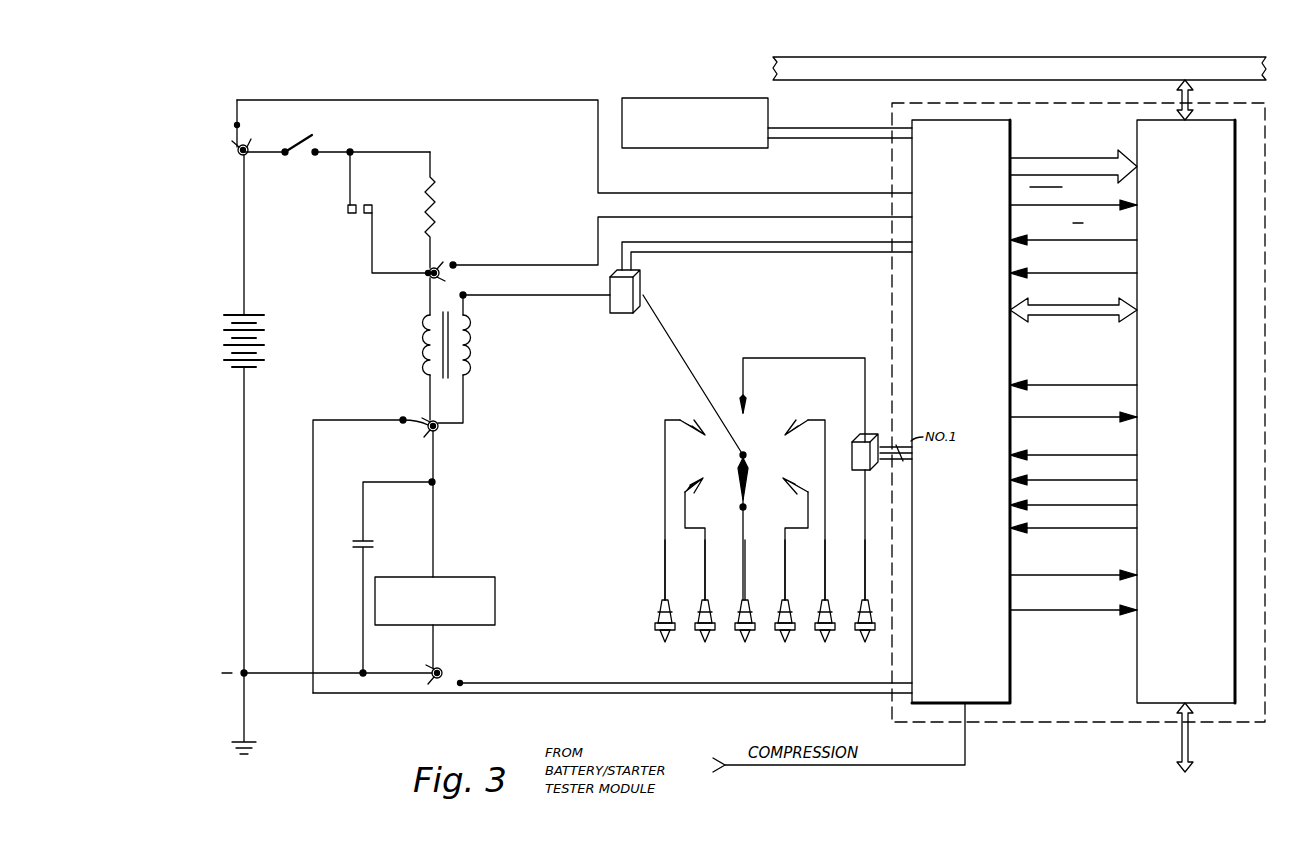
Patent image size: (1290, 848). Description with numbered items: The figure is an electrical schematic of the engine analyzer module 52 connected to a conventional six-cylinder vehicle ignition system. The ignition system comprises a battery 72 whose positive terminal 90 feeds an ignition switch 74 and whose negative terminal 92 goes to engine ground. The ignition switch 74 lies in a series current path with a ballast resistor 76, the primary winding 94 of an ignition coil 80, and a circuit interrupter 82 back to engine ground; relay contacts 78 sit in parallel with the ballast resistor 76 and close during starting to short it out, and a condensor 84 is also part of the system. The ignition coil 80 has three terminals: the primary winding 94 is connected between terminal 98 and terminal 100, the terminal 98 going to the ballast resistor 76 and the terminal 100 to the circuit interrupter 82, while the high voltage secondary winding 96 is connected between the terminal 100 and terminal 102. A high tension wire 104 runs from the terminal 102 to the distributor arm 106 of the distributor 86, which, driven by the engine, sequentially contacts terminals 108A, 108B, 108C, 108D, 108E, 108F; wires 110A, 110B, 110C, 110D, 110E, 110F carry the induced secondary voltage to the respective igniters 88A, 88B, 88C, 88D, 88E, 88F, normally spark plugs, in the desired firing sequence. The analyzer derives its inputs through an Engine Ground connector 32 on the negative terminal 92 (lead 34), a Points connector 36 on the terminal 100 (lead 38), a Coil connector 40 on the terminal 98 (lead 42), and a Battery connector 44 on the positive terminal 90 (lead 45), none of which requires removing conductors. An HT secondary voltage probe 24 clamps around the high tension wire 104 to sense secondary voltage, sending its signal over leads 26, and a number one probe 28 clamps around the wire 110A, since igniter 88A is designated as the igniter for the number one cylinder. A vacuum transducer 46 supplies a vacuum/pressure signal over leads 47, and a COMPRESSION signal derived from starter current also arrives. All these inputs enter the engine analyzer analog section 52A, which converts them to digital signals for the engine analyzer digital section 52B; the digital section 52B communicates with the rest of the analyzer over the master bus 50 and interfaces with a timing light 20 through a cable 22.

The timing light 20 is at (1184, 786).
The cable 22 is at (1198, 760).
The HT secondary voltage probe 24 is at (643, 288).
The pickup leads 26 is at (812, 243).
The No. 1 probe 28 is at (856, 440).
The Engine Ground connector 32 is at (443, 668).
The engine ground lead 34 is at (818, 684).
The Points connector 36 is at (427, 432).
The points lead 38 is at (403, 694).
The Coil connector 40 is at (452, 264).
The coil lead 42 is at (646, 218).
The Battery connector 44 is at (234, 147).
The battery lead 45 is at (617, 193).
The vacuum transducer 46 is at (639, 98).
The vacuum transducer leads 47 is at (793, 121).
The master bus 50 is at (862, 80).
The engine analyzer module 52 is at (1078, 423).
The engine analyzer analog section 52A is at (1012, 697).
The engine analyzer digital section 52B is at (1137, 656).
The battery 72 is at (220, 368).
The ignition switch 74 is at (305, 140).
The ballast resistor 76 is at (437, 208).
The relay contacts 78 is at (348, 211).
The ignition coil 80 is at (441, 345).
The circuit interrupter 82 is at (471, 577).
The condensor 84 is at (367, 540).
The distributor 86 is at (756, 459).
The igniter 88A is at (860, 637).
The igniter 88B is at (820, 637).
The igniter 88C is at (780, 637).
The igniter 88D is at (740, 637).
The igniter 88E is at (700, 637).
The igniter 88F is at (660, 637).
The positive terminal 90 is at (244, 177).
The negative terminal 92 is at (244, 658).
The primary winding 94 is at (428, 338).
The secondary winding 96 is at (468, 341).
The terminal 98 is at (428, 276).
The terminal 100 is at (440, 428).
The terminal 102 is at (465, 298).
The high tension wire 104 is at (555, 295).
The distributor arm 106 is at (747, 464).
The terminal 108A is at (746, 395).
The terminal 108B is at (793, 420).
The terminal 108C is at (789, 478).
The terminal 108D is at (749, 508).
The terminal 108E is at (700, 483).
The terminal 108F is at (683, 420).
The wire 110A is at (864, 580).
The wire 110B is at (824, 580).
The wire 110C is at (784, 580).
The wire 110D is at (744, 580).
The wire 110E is at (704, 580).
The wire 110F is at (661, 580).